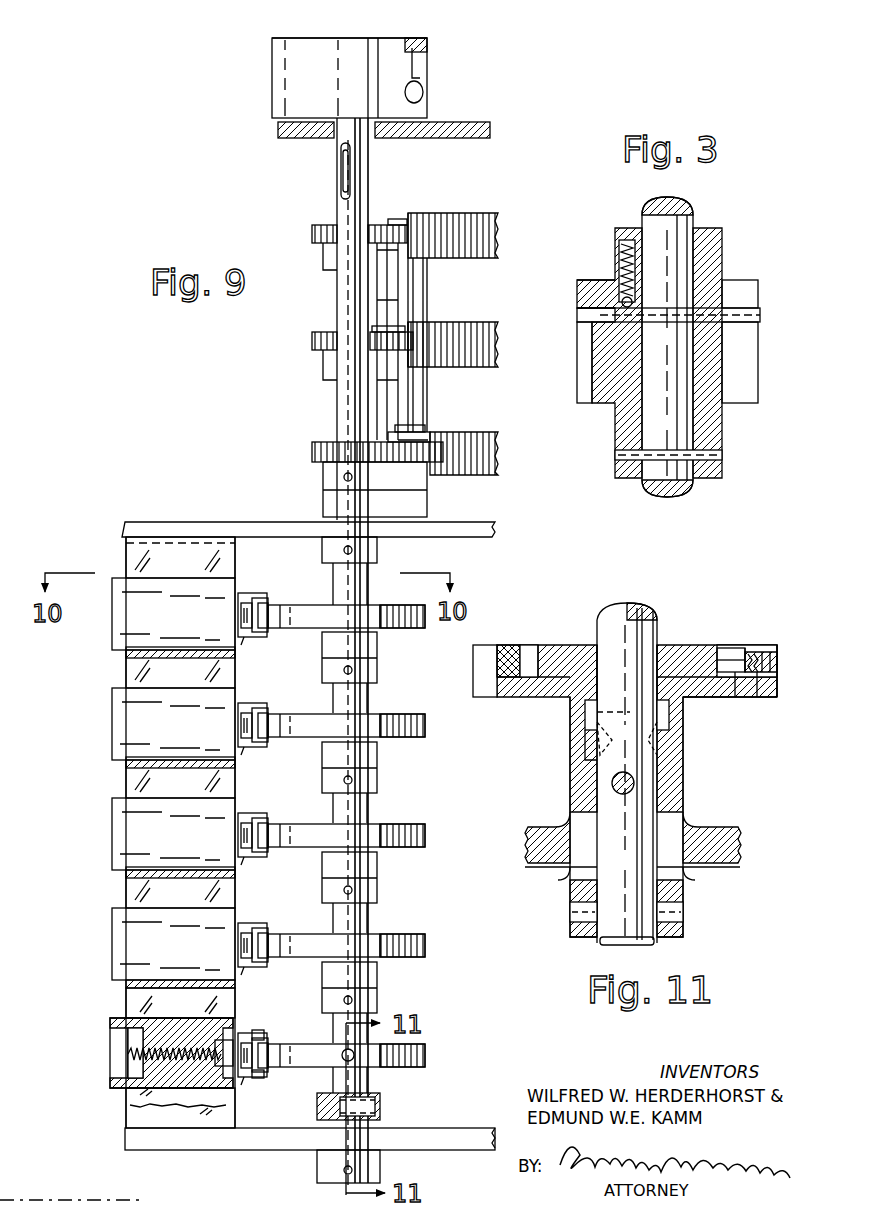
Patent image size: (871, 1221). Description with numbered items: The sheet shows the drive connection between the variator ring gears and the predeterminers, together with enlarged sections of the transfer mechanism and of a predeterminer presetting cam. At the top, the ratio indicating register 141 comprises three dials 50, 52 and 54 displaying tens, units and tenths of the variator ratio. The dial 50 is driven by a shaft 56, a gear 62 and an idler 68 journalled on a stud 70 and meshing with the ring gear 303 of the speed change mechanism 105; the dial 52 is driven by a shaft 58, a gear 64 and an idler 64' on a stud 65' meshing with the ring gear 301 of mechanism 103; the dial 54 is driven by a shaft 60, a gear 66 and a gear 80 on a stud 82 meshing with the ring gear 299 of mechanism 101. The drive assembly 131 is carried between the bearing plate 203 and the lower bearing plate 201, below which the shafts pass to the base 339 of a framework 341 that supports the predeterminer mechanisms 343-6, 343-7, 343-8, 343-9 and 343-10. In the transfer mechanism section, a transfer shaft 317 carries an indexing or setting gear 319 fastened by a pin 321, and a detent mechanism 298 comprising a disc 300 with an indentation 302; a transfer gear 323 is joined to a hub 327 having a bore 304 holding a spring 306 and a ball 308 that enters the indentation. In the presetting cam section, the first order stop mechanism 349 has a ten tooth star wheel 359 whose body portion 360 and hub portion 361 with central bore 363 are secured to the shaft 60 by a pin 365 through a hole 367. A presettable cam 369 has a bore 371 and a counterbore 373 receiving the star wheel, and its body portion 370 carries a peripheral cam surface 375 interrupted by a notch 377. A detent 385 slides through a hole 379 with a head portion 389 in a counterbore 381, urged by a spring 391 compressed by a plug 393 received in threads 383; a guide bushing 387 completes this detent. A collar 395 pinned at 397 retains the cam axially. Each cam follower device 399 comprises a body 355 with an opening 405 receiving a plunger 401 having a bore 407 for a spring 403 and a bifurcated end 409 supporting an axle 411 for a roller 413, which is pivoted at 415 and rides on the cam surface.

In FIG. 9, the ratio indicating register 141 is at (243, 62).
In FIG. 9, the tens dial 50 is at (420, 48).
In FIG. 9, the units dial 52 is at (424, 63).
In FIG. 9, the tenths dial 54 is at (425, 92).
In FIG. 9, the bearing plate 203 is at (472, 124).
In FIG. 9, the shaft 56 is at (340, 163).
In FIG. 9, the shaft 58 is at (343, 186).
In FIG. 9, the shaft 60 is at (343, 214).
In FIG. 11, the shaft 60 is at (636, 604).
In FIG. 9, the idler 68 is at (386, 224).
In FIG. 9, the stud 70 is at (400, 220).
In FIG. 9, the tens ring gear 303 is at (452, 216).
In FIG. 9, the speed change mechanism 105 is at (500, 220).
In FIG. 9, the drive assembly 131 is at (240, 212).
In FIG. 9, the gear 62 is at (312, 235).
In FIG. 9, the stud 65' is at (345, 307).
In FIG. 9, the idler 64' is at (349, 325).
In FIG. 9, the gear 64 is at (293, 353).
In FIG. 9, the speed change mechanism 103 is at (458, 322).
In FIG. 9, the units ring gear 301 is at (482, 330).
In FIG. 9, the stud 82 is at (412, 425).
In FIG. 9, the gear 80 is at (428, 437).
In FIG. 9, the speed change mechanism 101 is at (488, 428).
In FIG. 9, the gear 66 is at (312, 451).
In FIG. 9, the tenths ring gear 299 is at (462, 468).
In FIG. 9, the lower bearing plate 201 is at (212, 522).
In FIG. 9, the cam follower device 399 is at (118, 582).
In FIG. 9, the plunger 401 is at (252, 590).
In FIG. 9, the roller 413 is at (270, 610).
In FIG. 9, the first order stop mechanism 349 is at (382, 604).
In FIG. 11, the first order stop mechanism 349 is at (530, 612).
In FIG. 9, the peripheral cam surface 375 is at (426, 620).
In FIG. 11, the peripheral cam surface 375 is at (778, 698).
In FIG. 9, the predeterminer mechanism 343-6 is at (108, 636).
In FIG. 9, the predeterminer mechanism 343-7 is at (108, 704).
In FIG. 9, the predeterminer mechanism 343-8 is at (108, 824).
In FIG. 9, the predeterminer mechanism 343-9 is at (108, 919).
In FIG. 9, the predeterminer mechanism 343-10 is at (108, 1050).
In FIG. 9, the pivot 415 is at (246, 638).
In FIG. 9, the pin 397 is at (354, 670).
In FIG. 11, the pin 397 is at (634, 788).
In FIG. 9, the collar 395 is at (378, 680).
In FIG. 11, the collar 395 is at (572, 796).
In FIG. 9, the body 355 is at (196, 628).
In FIG. 9, the spring 403 is at (120, 1040).
In FIG. 9, the bore 407 is at (195, 1048).
In FIG. 9, the opening 405 is at (228, 1048).
In FIG. 9, the axle 411 is at (265, 1034).
In FIG. 9, the bifurcated end 409 is at (258, 1080).
In FIG. 9, the framework 341 is at (120, 1128).
In FIG. 11, the framework 341 is at (735, 868).
In FIG. 9, the base 339 is at (172, 1140).
In FIG. 11, the base 339 is at (725, 830).
In FIG. 3, the transfer shaft 317 is at (672, 218).
In FIG. 3, the hub 327 is at (722, 240).
In FIG. 3, the transfer gear 323 is at (740, 284).
In FIG. 3, the indexing or setting gear 319 is at (750, 390).
In FIG. 3, the detent mechanism 298 is at (610, 270).
In FIG. 3, the bore 304 is at (622, 243).
In FIG. 3, the spring 306 is at (620, 256).
In FIG. 3, the ball 308 is at (622, 300).
In FIG. 3, the indentation 302 is at (620, 306).
In FIG. 3, the disc 300 is at (687, 317).
In FIG. 3, the pin 321 is at (724, 455).
In FIG. 11, the presettable cam 369 is at (505, 645).
In FIG. 11, the counterbore 373 is at (538, 648).
In FIG. 11, the body portion 360 is at (586, 645).
In FIG. 11, the ten tooth star wheel 359 is at (664, 644).
In FIG. 11, the head portion 389 is at (746, 648).
In FIG. 11, the pawl 387 is at (730, 650).
In FIG. 11, the counterbore 381 is at (752, 650).
In FIG. 11, the detent 385 is at (718, 646).
In FIG. 11, the threads 383 is at (764, 652).
In FIG. 11, the plug 393 is at (790, 650).
In FIG. 11, the pin 365 is at (588, 712).
In FIG. 11, the central bore 363 is at (604, 740).
In FIG. 11, the hole 367 is at (590, 752).
In FIG. 11, the notch 377 is at (480, 680).
In FIG. 11, the body portion 370 is at (692, 698).
In FIG. 11, the hole 379 is at (735, 690).
In FIG. 11, the spring 391 is at (760, 690).
In FIG. 11, the hub portion 361 is at (672, 745).
In FIG. 11, the bore 371 is at (658, 758).